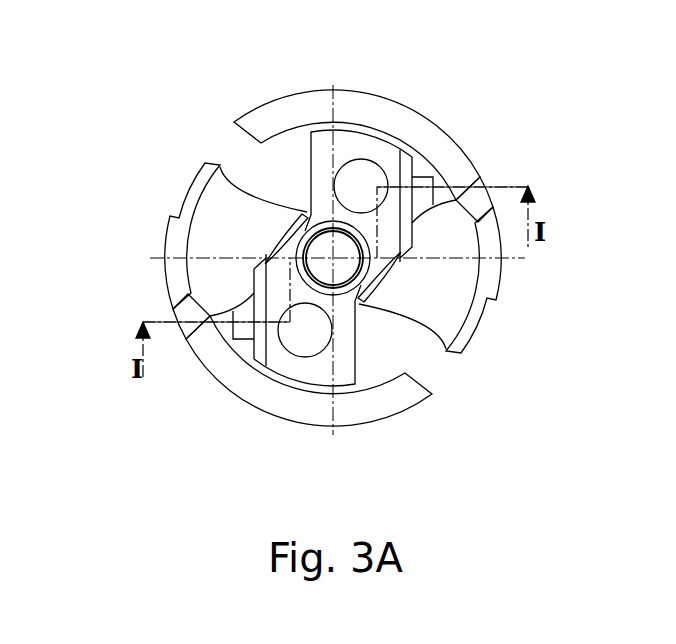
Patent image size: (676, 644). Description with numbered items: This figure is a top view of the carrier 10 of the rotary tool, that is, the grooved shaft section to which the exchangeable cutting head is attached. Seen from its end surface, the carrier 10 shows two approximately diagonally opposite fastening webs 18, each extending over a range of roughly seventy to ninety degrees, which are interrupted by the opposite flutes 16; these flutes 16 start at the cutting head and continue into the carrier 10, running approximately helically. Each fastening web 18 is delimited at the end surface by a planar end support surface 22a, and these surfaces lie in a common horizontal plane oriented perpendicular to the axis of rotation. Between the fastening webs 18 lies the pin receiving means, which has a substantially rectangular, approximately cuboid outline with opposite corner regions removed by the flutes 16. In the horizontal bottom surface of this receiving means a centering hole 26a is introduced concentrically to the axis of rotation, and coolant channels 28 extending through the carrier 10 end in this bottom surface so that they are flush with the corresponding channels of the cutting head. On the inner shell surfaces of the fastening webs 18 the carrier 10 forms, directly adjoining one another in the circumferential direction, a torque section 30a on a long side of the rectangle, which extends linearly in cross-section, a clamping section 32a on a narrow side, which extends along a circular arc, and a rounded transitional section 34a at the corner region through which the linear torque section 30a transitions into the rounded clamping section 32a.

The carrier 10 is at (132, 132).
The flutes 16 is at (275, 182).
The fastening webs 18 is at (348, 258).
The end support surfaces 22a is at (410, 119).
The centering hole 26a is at (340, 263).
The coolant channels 28 is at (362, 187).
The torque section 30a is at (255, 262).
The clamping section 32a is at (357, 388).
The transitional section 34a is at (270, 358).